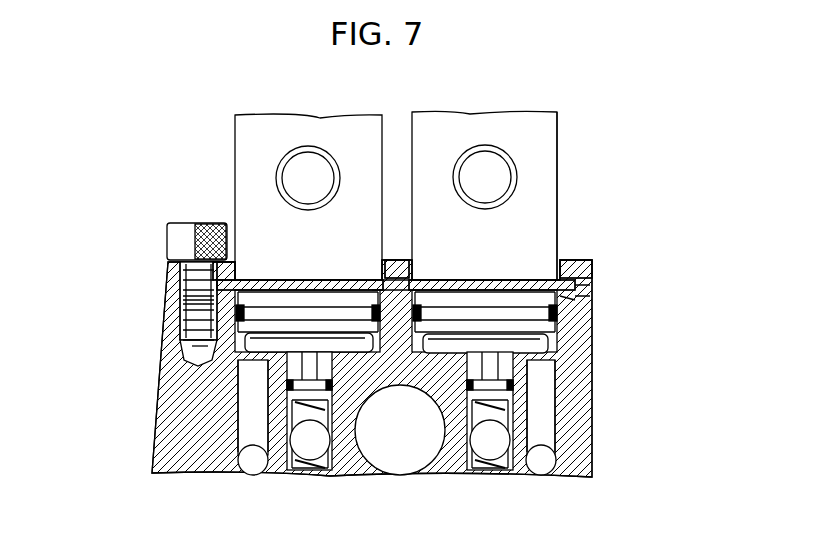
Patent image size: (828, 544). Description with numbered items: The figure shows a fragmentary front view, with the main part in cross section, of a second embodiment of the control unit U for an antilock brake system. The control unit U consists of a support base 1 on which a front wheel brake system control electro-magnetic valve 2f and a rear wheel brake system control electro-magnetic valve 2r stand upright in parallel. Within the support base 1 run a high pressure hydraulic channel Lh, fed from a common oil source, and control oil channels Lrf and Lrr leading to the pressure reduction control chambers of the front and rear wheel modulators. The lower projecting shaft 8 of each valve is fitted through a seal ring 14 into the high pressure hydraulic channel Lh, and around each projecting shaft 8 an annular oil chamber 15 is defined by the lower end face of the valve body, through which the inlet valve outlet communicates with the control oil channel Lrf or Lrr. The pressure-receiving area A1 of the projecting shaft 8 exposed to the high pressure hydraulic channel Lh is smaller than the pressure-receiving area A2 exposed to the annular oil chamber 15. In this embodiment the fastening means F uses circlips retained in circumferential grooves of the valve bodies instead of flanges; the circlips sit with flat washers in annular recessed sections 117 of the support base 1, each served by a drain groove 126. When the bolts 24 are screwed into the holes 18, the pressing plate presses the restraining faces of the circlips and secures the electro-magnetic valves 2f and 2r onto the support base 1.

The support base 1 is at (162, 432).
The rear wheel brake system control electro-magnetic valve 2r is at (289, 175).
The front wheel brake system control electro-magnetic valve 2f is at (497, 111).
The bolt 24 is at (186, 240).
The hole 18 is at (185, 322).
The annular oil chamber 15 is at (552, 352).
The annular recessed section 117 is at (580, 264).
The drain groove 126 is at (586, 291).
The projecting shaft 8 is at (292, 374).
The seal ring 14 is at (334, 386).
The high pressure hydraulic channel Lh is at (474, 432).
The control oil channel Lrr is at (246, 419).
The control oil channel Lrf is at (554, 416).
The pressure-receiving area A1 is at (512, 366).
The pressure-receiving area A2 is at (465, 370).
The fastening means F is at (152, 238).
The control unit U is at (645, 251).